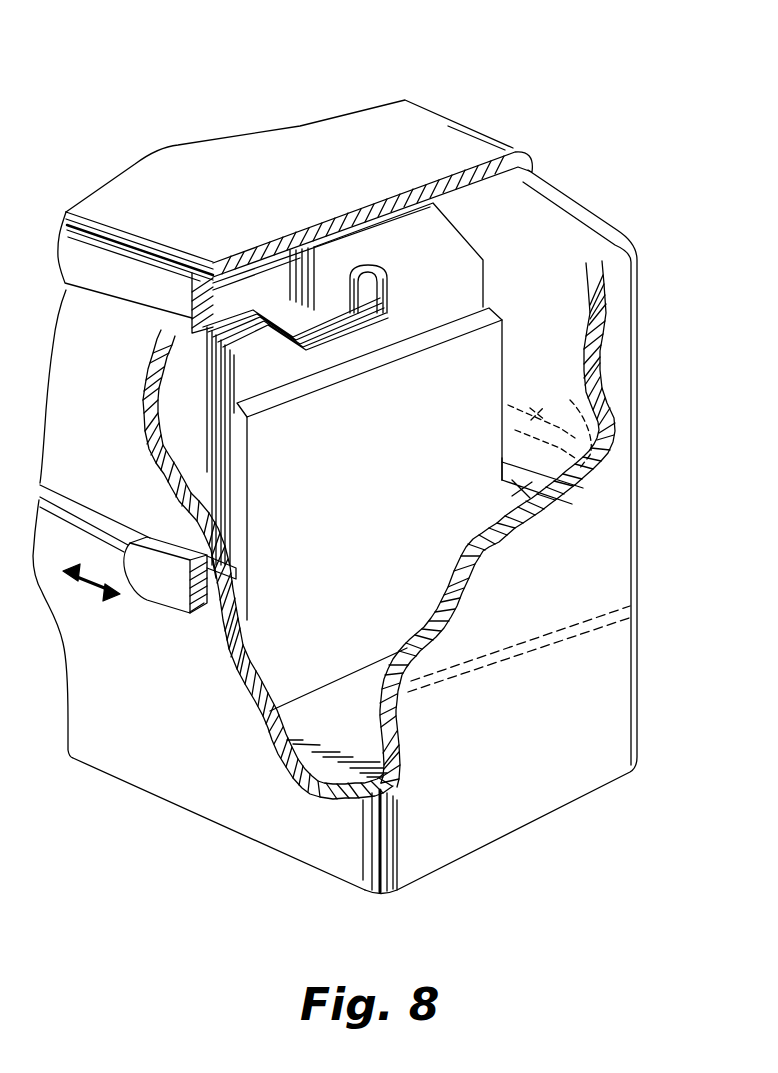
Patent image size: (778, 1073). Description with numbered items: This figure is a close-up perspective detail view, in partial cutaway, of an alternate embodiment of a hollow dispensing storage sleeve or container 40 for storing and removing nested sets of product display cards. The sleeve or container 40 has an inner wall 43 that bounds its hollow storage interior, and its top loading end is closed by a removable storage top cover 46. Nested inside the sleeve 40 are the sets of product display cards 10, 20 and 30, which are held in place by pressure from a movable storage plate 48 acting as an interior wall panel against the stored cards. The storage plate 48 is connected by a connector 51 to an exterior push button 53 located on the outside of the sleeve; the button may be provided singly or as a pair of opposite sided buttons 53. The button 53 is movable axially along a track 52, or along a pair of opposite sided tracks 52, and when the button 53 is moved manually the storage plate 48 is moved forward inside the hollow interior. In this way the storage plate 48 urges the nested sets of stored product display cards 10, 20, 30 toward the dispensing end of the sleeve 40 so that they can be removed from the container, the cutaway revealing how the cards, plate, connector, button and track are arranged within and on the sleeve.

The hollow dispensing storage sleeve 40 is at (617, 117).
The inner wall 43 is at (664, 245).
The removable storage top cover 46 is at (294, 150).
The product display card 30 is at (459, 227).
The storage plate 48 is at (486, 336).
The product display card 10 is at (202, 400).
The product display card 20 is at (212, 493).
The connector 51 is at (238, 573).
The track 52 is at (102, 526).
The exterior push button 53 is at (172, 596).